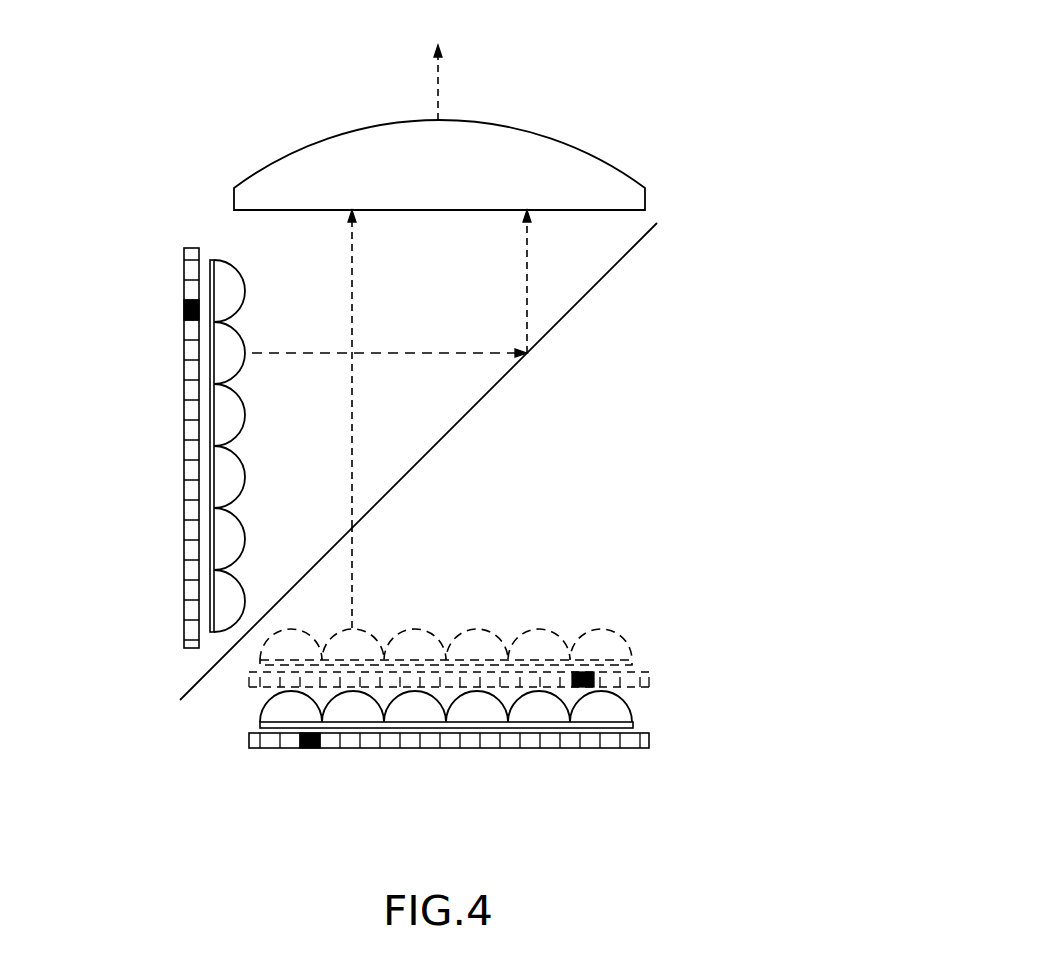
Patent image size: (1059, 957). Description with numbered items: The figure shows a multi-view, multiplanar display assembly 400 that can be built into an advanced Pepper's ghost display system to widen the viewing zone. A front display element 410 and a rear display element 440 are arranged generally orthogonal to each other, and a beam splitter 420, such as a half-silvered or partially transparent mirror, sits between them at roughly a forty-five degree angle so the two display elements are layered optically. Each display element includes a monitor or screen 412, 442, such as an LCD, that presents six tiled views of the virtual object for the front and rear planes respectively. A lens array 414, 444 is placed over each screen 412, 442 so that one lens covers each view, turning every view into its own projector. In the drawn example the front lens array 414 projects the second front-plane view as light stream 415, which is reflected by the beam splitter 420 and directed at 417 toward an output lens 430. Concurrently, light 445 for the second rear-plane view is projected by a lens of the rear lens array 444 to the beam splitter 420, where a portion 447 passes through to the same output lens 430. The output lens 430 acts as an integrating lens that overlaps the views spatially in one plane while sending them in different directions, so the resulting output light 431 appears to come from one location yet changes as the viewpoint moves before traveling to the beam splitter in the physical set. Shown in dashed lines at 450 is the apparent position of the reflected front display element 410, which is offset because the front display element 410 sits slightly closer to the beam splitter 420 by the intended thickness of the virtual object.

The multi-view, multiplanar display assembly 400 is at (652, 79).
The front display element 410 is at (115, 296).
The monitor or screen 412 is at (188, 248).
The lens array 414 is at (255, 588).
The light stream 415 is at (278, 356).
The reflected light 417 is at (522, 270).
The beam splitter 420 is at (609, 272).
The output lens 430 is at (662, 158).
The output or projected light 431 is at (442, 100).
The rear display element 440 is at (675, 781).
The monitor or screen 442 is at (250, 750).
The lens array 444 is at (652, 706).
The light 445 is at (352, 573).
The transmitted light portion 447 is at (352, 276).
The apparent position of the reflected front display element 450 is at (630, 618).